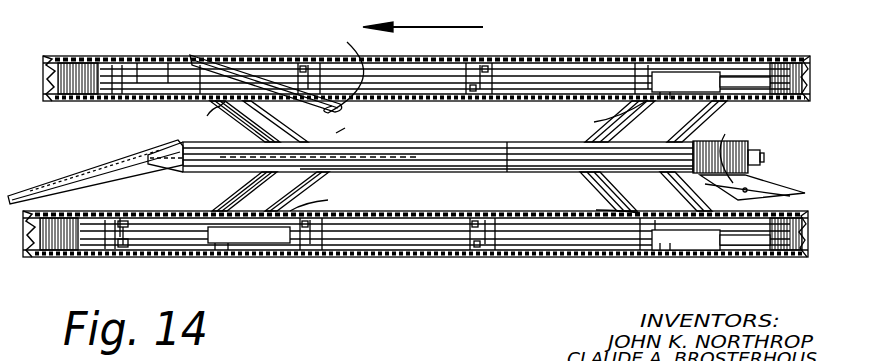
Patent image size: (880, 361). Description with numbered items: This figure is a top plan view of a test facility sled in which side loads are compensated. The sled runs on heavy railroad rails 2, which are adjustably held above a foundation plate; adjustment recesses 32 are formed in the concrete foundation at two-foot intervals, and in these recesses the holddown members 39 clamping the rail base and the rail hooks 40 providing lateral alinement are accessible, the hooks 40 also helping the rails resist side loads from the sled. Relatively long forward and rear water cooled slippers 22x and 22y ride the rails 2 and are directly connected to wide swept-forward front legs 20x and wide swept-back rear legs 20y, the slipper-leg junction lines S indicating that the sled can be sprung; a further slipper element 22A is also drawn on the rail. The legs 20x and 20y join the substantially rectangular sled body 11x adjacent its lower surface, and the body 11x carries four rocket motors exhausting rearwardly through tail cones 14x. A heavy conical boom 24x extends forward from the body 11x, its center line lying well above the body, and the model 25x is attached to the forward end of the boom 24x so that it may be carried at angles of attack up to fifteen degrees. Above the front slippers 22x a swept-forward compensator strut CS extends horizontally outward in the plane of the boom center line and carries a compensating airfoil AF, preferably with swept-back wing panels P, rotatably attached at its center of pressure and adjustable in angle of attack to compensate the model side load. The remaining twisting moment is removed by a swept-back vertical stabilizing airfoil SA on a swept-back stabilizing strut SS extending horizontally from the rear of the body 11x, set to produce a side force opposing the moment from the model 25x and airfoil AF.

The adjustment recesses 32 is at (44, 71).
The rails 2 is at (198, 77).
The forward water cooled slippers 22x is at (266, 69).
The compensating airfoil AF is at (212, 66).
The swept-back wing panels P is at (344, 76).
The rear water cooled slippers 22y is at (682, 81).
The carriage block 22A is at (250, 250).
The rail hooks 40 is at (133, 250).
The holddown members 39 is at (128, 247).
The conical boom 24x is at (344, 158).
The sled body 11x is at (448, 166).
The tail cones 14x is at (765, 160).
The model 25x is at (57, 178).
The swept-forward front legs 20x is at (263, 156).
The swept-back rear legs 20y is at (676, 140).
The slipper-leg junction lines S is at (421, 160).
The compensator strut CS is at (345, 128).
The stabilizing strut SS is at (734, 148).
The vertical stabilizing airfoil SA is at (776, 190).